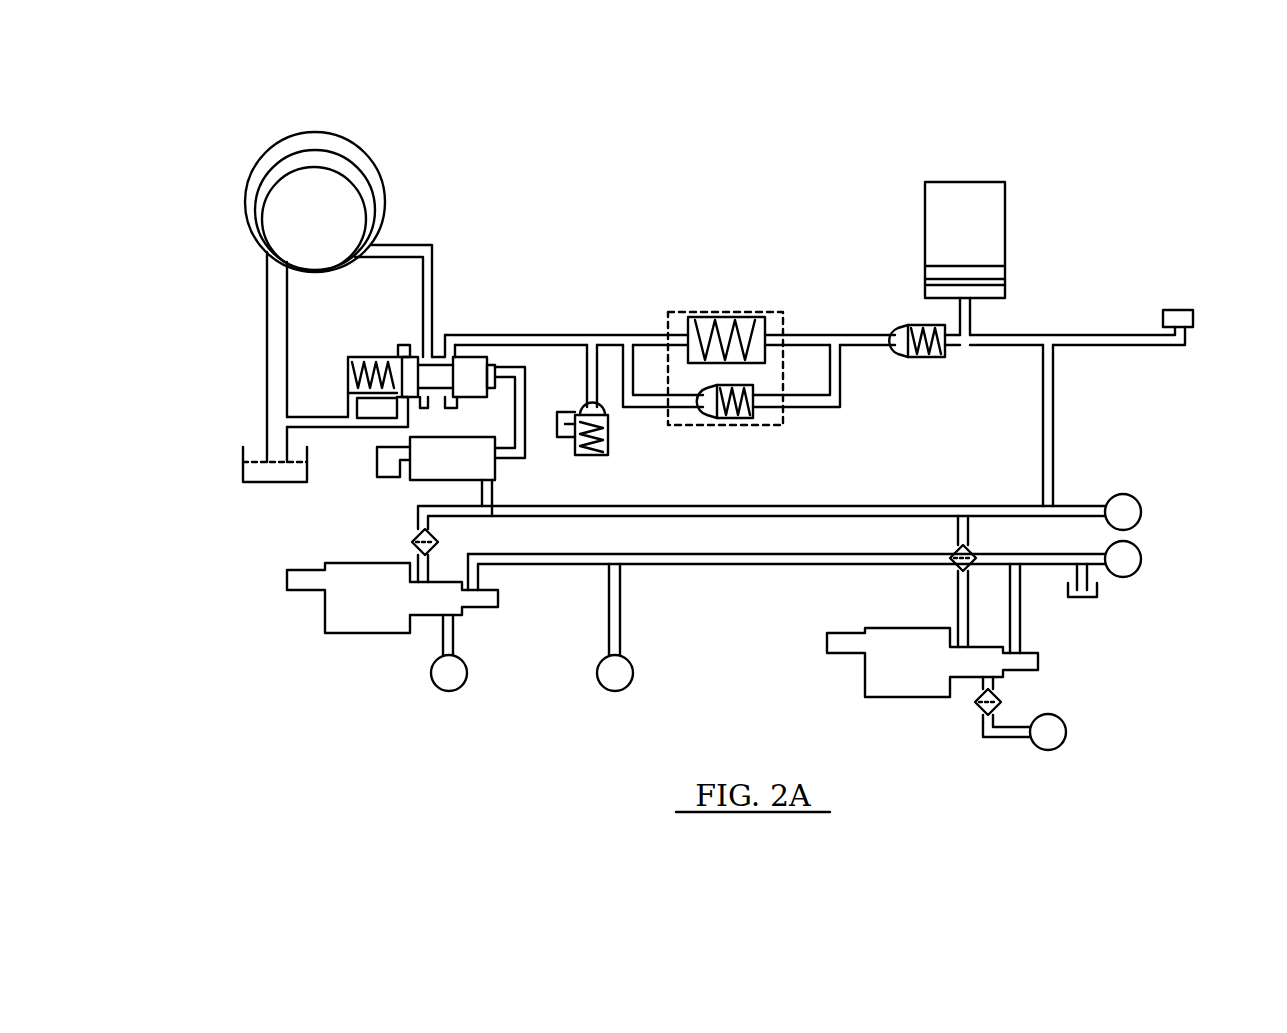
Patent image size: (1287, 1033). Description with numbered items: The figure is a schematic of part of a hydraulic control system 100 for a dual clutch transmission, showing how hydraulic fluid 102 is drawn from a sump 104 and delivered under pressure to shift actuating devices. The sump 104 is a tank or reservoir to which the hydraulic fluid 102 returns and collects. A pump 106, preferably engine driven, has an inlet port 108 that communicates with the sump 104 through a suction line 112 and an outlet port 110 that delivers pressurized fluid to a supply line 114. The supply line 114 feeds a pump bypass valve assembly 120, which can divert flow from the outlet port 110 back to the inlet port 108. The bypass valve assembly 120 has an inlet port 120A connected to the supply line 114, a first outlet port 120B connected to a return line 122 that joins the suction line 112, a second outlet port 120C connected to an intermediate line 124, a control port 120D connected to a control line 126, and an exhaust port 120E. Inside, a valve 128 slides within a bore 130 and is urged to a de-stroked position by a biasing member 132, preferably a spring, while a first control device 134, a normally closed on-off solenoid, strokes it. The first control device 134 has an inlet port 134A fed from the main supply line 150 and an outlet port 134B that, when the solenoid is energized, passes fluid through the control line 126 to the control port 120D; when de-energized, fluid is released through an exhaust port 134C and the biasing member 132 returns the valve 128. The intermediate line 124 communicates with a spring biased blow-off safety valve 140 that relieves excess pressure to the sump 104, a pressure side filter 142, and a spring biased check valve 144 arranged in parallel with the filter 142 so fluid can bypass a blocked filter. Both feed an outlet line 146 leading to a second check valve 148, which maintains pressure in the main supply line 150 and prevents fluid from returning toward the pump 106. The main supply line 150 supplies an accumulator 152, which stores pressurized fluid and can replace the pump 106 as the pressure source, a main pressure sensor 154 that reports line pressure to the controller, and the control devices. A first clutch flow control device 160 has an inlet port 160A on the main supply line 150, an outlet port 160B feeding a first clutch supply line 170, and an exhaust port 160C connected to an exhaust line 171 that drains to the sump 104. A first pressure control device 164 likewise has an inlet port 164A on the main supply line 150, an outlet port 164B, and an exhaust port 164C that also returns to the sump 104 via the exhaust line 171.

The hydraulic control system 100 is at (1173, 179).
The hydraulic fluid 102 is at (258, 450).
The sump 104 is at (245, 462).
The pump 106 is at (341, 127).
The inlet port 108 is at (270, 262).
The outlet port 110 is at (368, 262).
The suction line 112 is at (268, 322).
The supply line 114 is at (434, 254).
The pump bypass valve assembly 120 is at (408, 343).
The inlet port 120A is at (432, 306).
The first outlet port 120B is at (392, 430).
The second outlet port 120C is at (460, 333).
The control port 120D is at (497, 368).
The exhaust port 120E is at (355, 410).
The return line 122 is at (285, 470).
The intermediate line 124 is at (647, 333).
The control line 126 is at (528, 400).
The valve 128 is at (362, 366).
The bore 130 is at (400, 344).
The biasing member 132 is at (350, 378).
The first control device 134 is at (411, 542).
The inlet port 134A is at (492, 487).
The outlet port 134B is at (497, 458).
The exhaust port 134C is at (375, 470).
The spring biased blow-off safety valve 140 is at (609, 435).
The pressure side filter 142 is at (745, 316).
The spring biased check valve 144 is at (735, 419).
The outlet line 146 is at (837, 333).
The second check valve 148 is at (918, 358).
The main supply line 150 is at (1054, 380).
The accumulator 152 is at (1005, 212).
The main pressure sensor 154 is at (1194, 318).
The first clutch flow control device 160 is at (340, 635).
The inlet port 160A is at (432, 570).
The outlet port 160B is at (455, 615).
The exhaust port 160C is at (480, 595).
The first pressure control device 164 is at (900, 698).
The inlet port 164A is at (958, 640).
The outlet port 164B is at (995, 680).
The exhaust port 164C is at (1022, 641).
The first clutch supply line 170 is at (443, 640).
The exhaust line 171 is at (722, 566).